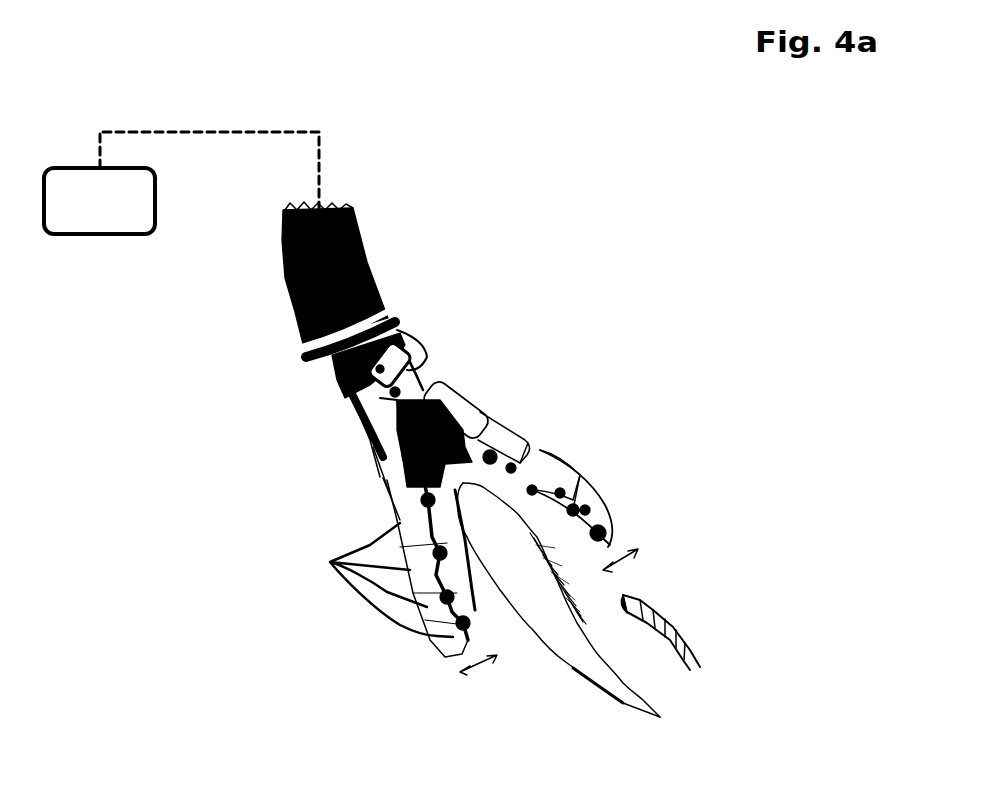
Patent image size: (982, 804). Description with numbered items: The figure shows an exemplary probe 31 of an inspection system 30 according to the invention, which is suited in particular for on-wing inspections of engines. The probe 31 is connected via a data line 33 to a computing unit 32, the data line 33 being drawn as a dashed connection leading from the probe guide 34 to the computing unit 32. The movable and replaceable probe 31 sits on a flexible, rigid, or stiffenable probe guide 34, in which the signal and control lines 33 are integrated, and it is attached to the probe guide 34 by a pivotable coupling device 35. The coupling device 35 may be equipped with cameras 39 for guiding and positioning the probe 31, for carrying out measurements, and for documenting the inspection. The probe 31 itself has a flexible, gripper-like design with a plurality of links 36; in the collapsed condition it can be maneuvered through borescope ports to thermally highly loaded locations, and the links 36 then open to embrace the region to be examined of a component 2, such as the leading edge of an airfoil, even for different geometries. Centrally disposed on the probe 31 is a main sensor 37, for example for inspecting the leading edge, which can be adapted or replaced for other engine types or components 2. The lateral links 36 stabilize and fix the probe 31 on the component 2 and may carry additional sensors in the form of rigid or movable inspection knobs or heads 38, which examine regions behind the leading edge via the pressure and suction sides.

The component 2 is at (563, 646).
The system 30 is at (123, 443).
The probe 31 is at (583, 270).
The computing unit 32 is at (99, 201).
The data line 33 is at (320, 168).
The probe guide 34 is at (366, 262).
The pivotable coupling device 35 is at (405, 346).
The links 36 is at (371, 580).
The main sensor 37 is at (470, 472).
The inspection knobs or heads 38 is at (508, 623).
The cameras 39 is at (410, 397).